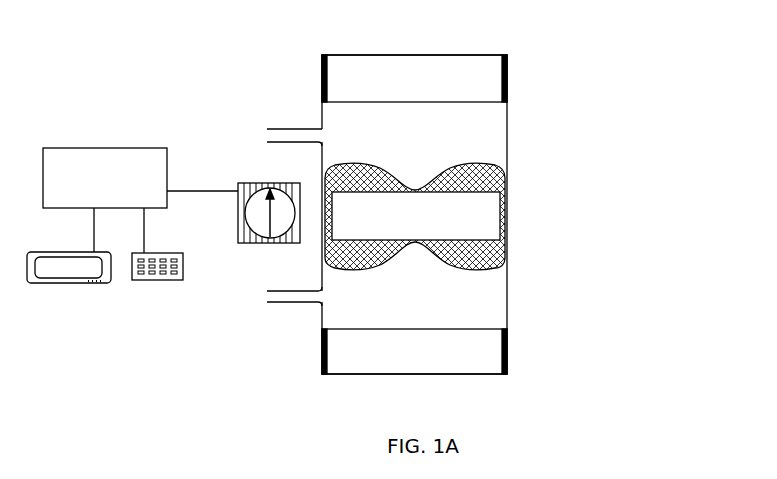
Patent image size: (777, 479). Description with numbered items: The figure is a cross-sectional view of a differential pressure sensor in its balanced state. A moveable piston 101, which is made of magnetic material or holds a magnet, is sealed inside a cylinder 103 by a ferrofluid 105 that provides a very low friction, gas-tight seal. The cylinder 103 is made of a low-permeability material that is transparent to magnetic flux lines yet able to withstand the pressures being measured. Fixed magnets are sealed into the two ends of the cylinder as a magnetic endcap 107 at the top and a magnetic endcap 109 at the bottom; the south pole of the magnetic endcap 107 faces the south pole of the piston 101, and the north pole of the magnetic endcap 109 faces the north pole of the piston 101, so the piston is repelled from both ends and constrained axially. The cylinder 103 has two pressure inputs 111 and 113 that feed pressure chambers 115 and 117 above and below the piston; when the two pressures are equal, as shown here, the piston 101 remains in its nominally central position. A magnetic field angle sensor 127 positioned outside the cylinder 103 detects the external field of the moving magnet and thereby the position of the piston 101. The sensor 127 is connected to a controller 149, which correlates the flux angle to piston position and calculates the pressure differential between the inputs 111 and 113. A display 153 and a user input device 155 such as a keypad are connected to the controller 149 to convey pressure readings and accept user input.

The moveable piston 101 is at (492, 215).
The cylinder 103 is at (374, 54).
The ferrofluid 105 is at (505, 252).
The magnetic endcap 107 is at (453, 62).
The magnetic endcap 109 is at (473, 366).
The pressure input 111 is at (297, 127).
The pressure input 113 is at (297, 305).
The pressure chamber 115 is at (497, 133).
The pressure chamber 117 is at (497, 295).
The magnetic field angle sensor 127 is at (258, 248).
The controller 149 is at (80, 146).
The display 153 is at (67, 286).
The user input device 155 is at (157, 286).